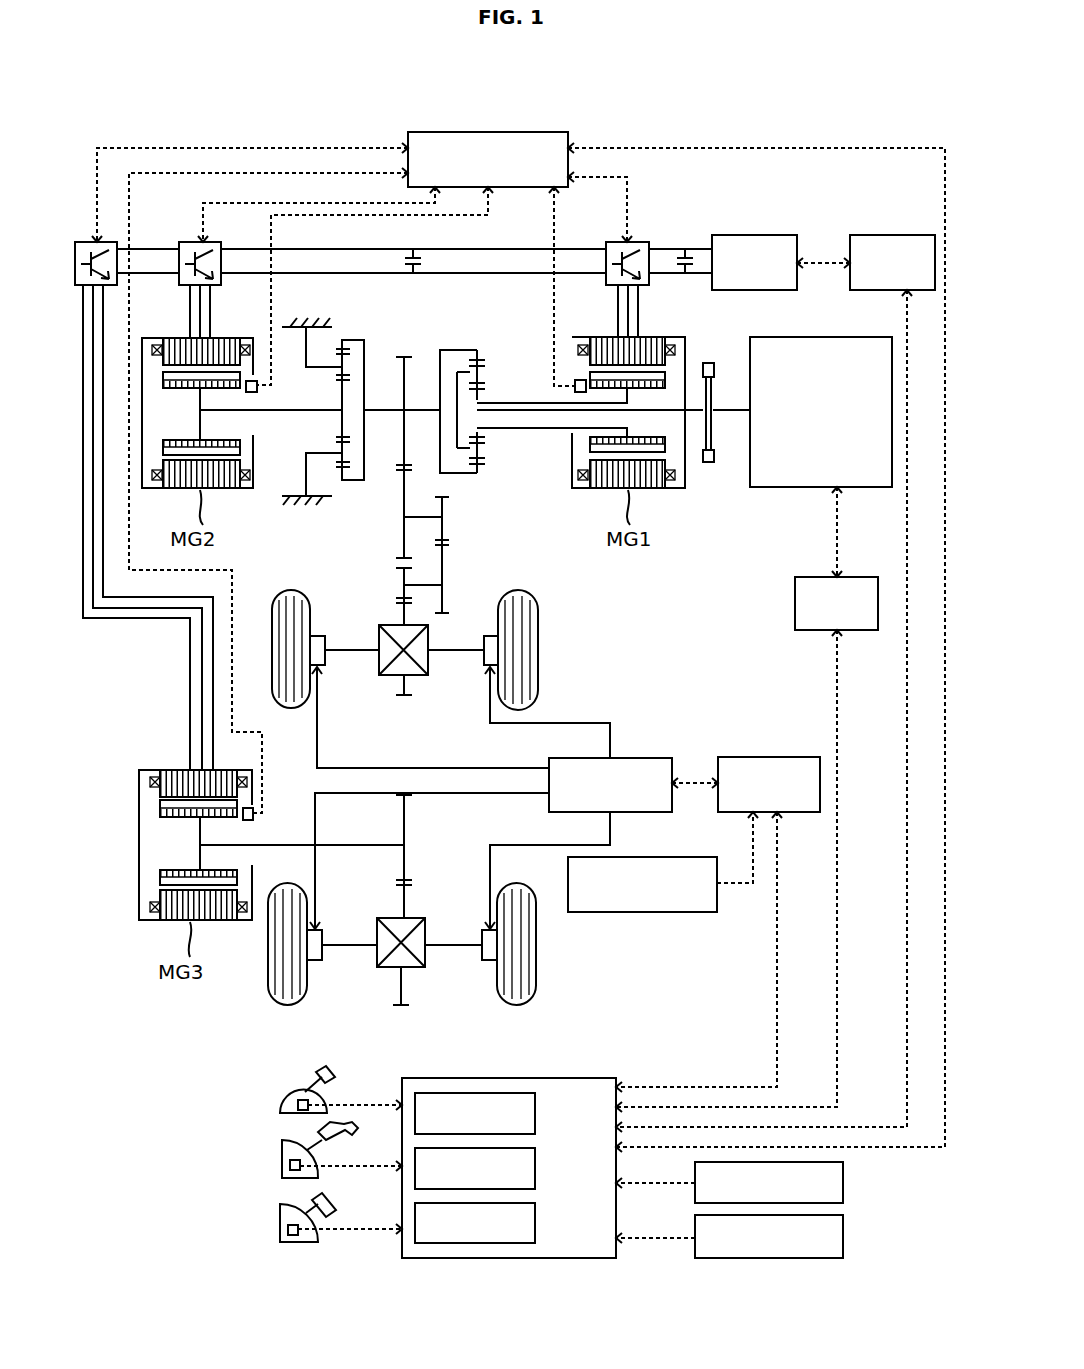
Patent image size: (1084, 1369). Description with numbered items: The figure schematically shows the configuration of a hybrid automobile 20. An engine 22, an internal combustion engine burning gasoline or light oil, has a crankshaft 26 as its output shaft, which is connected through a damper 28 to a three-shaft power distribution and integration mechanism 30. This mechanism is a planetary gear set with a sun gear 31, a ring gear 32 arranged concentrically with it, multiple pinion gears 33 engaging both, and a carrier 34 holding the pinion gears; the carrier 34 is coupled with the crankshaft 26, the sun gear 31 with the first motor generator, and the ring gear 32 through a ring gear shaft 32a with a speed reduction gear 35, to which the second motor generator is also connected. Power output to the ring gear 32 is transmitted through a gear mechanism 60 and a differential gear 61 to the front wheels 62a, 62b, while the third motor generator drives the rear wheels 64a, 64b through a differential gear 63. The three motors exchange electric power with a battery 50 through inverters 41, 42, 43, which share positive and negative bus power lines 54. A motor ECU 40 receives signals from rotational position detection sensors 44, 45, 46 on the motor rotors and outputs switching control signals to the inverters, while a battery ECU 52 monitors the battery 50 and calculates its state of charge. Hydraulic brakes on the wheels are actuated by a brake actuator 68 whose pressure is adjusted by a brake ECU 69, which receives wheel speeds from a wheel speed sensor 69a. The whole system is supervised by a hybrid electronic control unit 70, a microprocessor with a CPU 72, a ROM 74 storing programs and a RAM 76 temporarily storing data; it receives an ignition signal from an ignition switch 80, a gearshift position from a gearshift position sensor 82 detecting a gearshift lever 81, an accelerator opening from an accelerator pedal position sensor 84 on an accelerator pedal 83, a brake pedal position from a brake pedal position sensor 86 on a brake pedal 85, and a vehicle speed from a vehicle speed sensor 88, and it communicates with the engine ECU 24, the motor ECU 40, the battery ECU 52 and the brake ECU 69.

The hybrid automobile 20 is at (672, 125).
The engine 22 is at (832, 337).
The engine electronic control unit 24 is at (795, 603).
The crankshaft 26 is at (733, 412).
The damper 28 is at (712, 462).
The power distribution and integration mechanism 30 is at (533, 405).
The sun gear 31 is at (480, 430).
The ring gear 32 is at (477, 473).
The ring gear shaft 32a is at (386, 410).
The pinion gears 33 is at (477, 452).
The carrier 34 is at (447, 362).
The speed reduction gear 35 is at (352, 331).
The motor electronic control unit 40 is at (488, 132).
The inverter 41 is at (618, 242).
The inverter 42 is at (190, 242).
The inverter 43 is at (90, 242).
The rotational position detection sensor 44 is at (577, 380).
The rotational position detection sensor 45 is at (252, 381).
The rotational position detection sensor 46 is at (253, 820).
The battery 50 is at (757, 235).
The battery electronic control unit 52 is at (905, 235).
The power lines 54 is at (477, 272).
The gear mechanism 60 is at (455, 552).
The differential gear 61 is at (428, 672).
The front wheel 62a is at (290, 710).
The front wheel 62b is at (540, 690).
The differential gear 63 is at (425, 962).
The rear wheel 64a is at (268, 965).
The rear wheel 64b is at (536, 978).
The brake actuator 68 is at (657, 758).
The brake ECU 69 is at (772, 757).
The wheel speed sensor 69a is at (640, 912).
The hybrid electronic control unit 70 is at (509, 1200).
The CPU 72 is at (535, 1112).
The ROM 74 is at (535, 1167).
The RAM 76 is at (535, 1222).
The ignition switch 80 is at (843, 1180).
The gearshift lever 81 is at (322, 1080).
The gearshift position sensor 82 is at (298, 1105).
The accelerator pedal 83 is at (312, 1146).
The accelerator pedal position sensor 84 is at (290, 1165).
The brake pedal 85 is at (312, 1204).
The brake pedal position sensor 86 is at (288, 1230).
The vehicle speed sensor 88 is at (843, 1233).